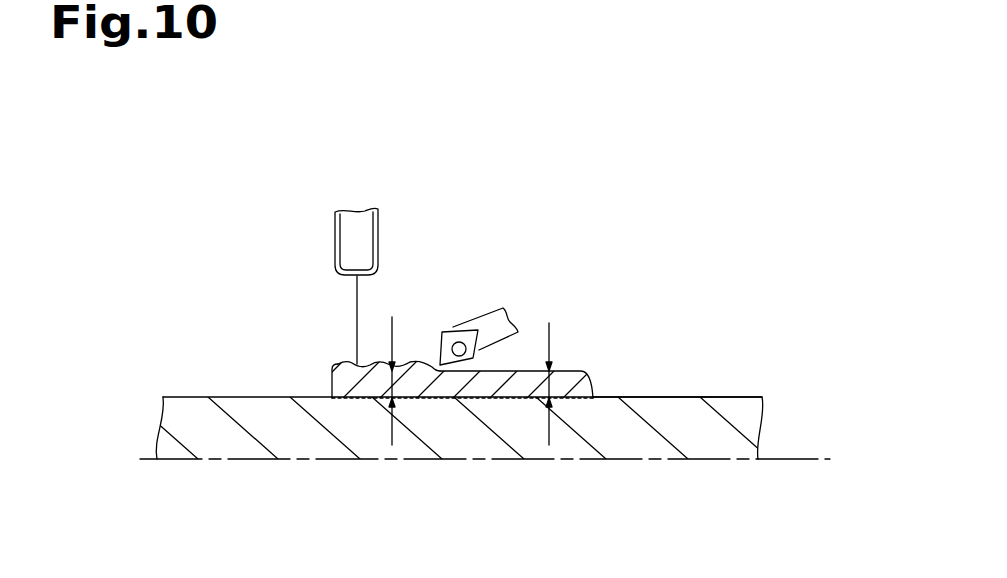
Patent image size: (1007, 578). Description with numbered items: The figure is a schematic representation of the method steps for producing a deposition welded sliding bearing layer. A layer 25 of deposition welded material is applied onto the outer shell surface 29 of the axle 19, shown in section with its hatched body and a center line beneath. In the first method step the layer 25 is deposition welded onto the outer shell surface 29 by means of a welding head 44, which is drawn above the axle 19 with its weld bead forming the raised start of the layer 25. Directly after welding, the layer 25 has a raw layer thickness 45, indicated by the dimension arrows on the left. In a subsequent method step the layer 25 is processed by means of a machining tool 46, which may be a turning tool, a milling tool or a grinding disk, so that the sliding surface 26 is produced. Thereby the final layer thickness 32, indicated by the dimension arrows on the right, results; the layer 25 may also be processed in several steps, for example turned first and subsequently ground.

The axle 19 is at (717, 423).
The outer shell surface 29 is at (653, 398).
The sliding surface 26 is at (566, 371).
The layer 25 is at (333, 370).
The welding head 44 is at (410, 218).
The machining tool 46 is at (534, 300).
The raw layer thickness 45 is at (390, 437).
The final layer thickness 32 is at (549, 438).